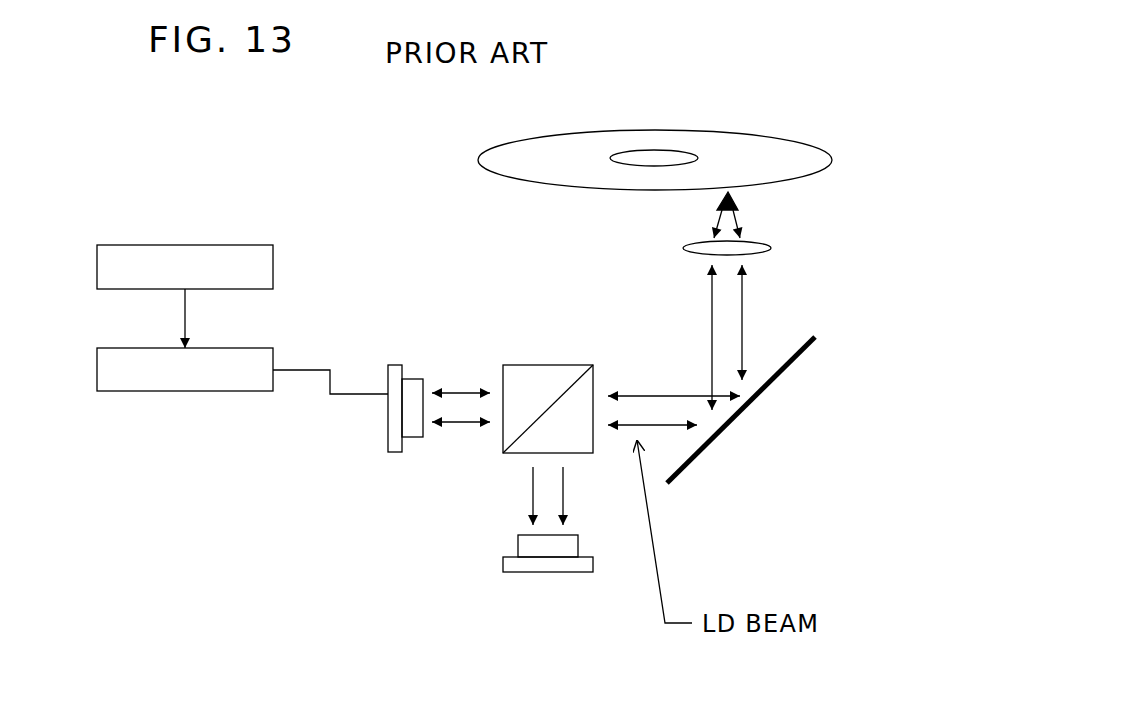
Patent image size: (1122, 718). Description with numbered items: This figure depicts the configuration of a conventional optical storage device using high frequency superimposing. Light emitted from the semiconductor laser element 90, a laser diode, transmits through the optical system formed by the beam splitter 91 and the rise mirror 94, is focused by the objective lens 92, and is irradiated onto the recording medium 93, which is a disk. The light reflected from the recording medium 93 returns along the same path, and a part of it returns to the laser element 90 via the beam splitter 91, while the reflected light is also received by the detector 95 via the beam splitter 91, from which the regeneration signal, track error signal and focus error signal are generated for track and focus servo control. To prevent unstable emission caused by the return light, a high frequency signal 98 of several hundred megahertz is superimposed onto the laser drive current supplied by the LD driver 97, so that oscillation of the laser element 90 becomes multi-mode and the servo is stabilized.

The semiconductor laser element 90 is at (382, 468).
The beam splitter 91 is at (492, 468).
The objective lens 92 is at (668, 249).
The recording medium 93 is at (593, 125).
The rise mirror 94 is at (734, 419).
The detector 95 is at (535, 600).
The LD driver 97 is at (202, 391).
The high frequency signal 98 is at (202, 245).